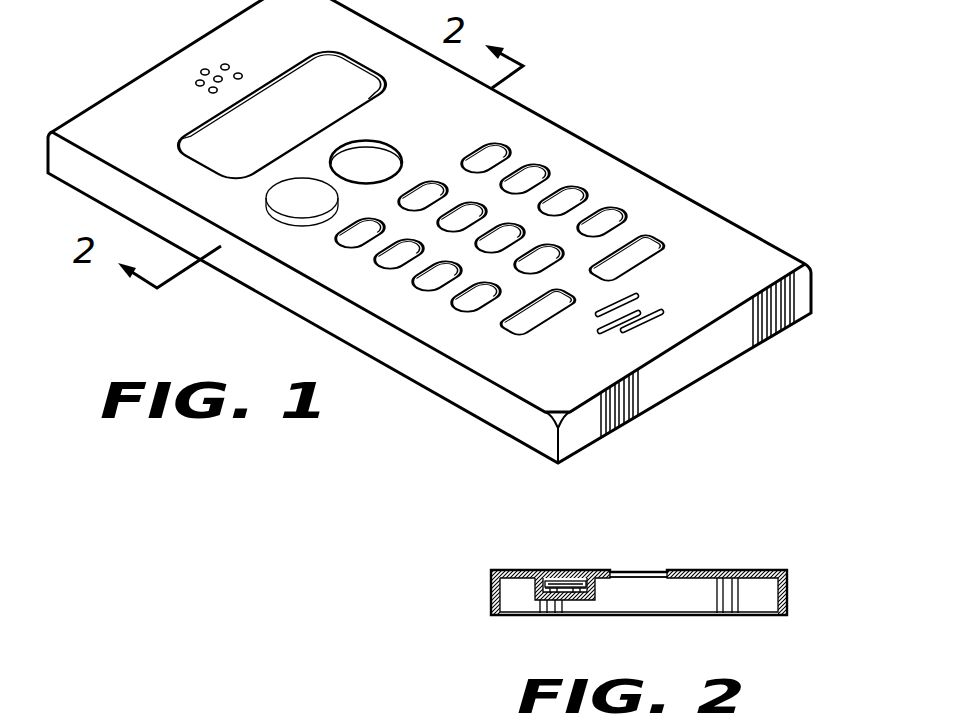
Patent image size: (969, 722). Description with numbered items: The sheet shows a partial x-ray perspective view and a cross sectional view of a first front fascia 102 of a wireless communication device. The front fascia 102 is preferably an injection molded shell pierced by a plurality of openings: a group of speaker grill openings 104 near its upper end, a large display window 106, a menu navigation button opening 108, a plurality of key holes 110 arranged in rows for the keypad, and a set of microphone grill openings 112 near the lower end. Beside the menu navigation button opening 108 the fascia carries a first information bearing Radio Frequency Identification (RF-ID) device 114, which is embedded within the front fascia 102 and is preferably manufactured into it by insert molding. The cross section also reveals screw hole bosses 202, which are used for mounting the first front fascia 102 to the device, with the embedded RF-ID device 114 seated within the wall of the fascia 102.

In FIG. 1, the first front fascia 102 is at (648, 176).
In FIG. 1, the speaker grill openings 104 is at (200, 80).
In FIG. 1, the display window 106 is at (306, 129).
In FIG. 1, the menu navigation button opening 108 is at (398, 147).
In FIG. 2, the menu navigation button opening 108 is at (641, 570).
In FIG. 1, the key holes 110 is at (484, 143).
In FIG. 1, the microphone grill openings 112 is at (663, 300).
In FIG. 1, the first information bearing Radio Frequency Identification (RF-ID) device 114 is at (268, 199).
In FIG. 2, the first information bearing Radio Frequency Identification (RF-ID) device 114 is at (575, 580).
In FIG. 2, the screw hole bosses 202 is at (732, 626).